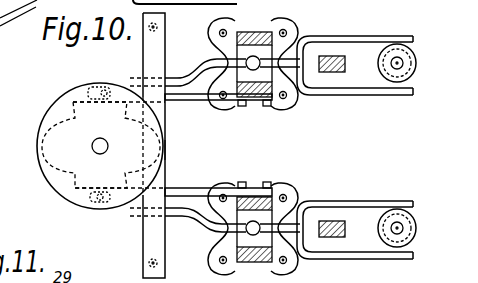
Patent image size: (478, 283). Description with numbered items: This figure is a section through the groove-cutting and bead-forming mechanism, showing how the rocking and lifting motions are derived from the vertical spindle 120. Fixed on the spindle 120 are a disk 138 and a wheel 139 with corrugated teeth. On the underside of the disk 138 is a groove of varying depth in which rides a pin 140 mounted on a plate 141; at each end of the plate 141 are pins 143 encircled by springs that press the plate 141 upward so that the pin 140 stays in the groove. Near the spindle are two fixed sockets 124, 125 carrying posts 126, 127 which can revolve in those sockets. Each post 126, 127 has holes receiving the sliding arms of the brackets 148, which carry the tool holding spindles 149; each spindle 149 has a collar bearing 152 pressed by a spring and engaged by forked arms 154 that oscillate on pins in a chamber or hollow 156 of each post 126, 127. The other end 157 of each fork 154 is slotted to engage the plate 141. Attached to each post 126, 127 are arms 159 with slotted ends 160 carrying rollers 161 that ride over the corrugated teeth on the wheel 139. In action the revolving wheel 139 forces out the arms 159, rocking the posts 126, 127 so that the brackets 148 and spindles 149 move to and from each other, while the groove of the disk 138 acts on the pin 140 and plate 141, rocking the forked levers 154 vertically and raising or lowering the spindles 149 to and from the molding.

The vertical spindle 120 is at (97, 150).
The socket 124 is at (294, 193).
The socket 125 is at (288, 29).
The post 126 is at (276, 263).
The post 127 is at (259, 31).
The disk 138 is at (42, 116).
The wheel with corrugated teeth 139 is at (38, 150).
The pin 140 is at (167, 155).
The plate 141 is at (143, 32).
The pin 143 is at (148, 264).
The bracket 148 is at (333, 55).
The tool holding spindle 149 is at (400, 65).
The collar bearing 152 is at (413, 59).
The forked arm 154 is at (393, 37).
The chamber or hollow 156 is at (253, 255).
The other end of the fork 157 is at (165, 79).
The arm 159 is at (182, 100).
The slotted end 160 is at (80, 86).
The roller 161 is at (97, 83).